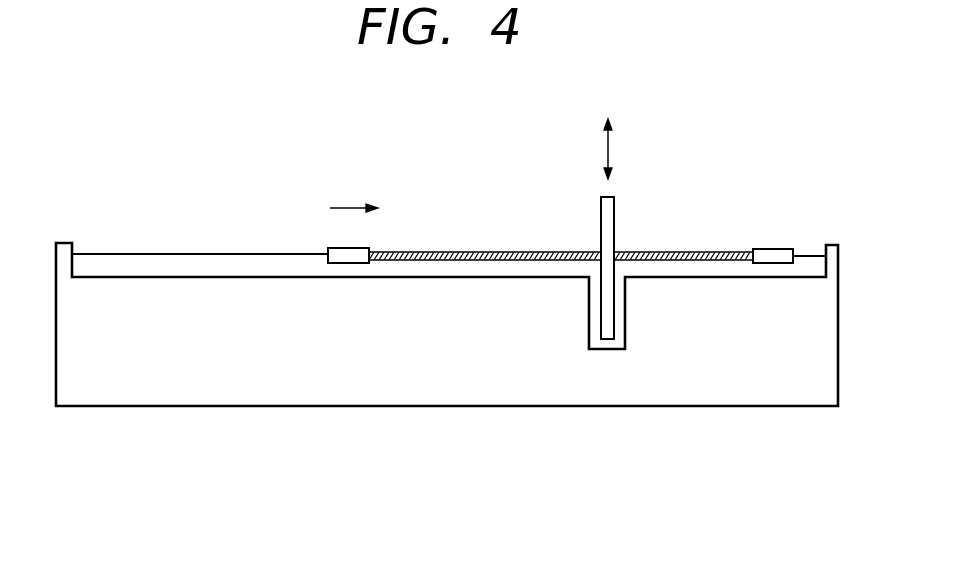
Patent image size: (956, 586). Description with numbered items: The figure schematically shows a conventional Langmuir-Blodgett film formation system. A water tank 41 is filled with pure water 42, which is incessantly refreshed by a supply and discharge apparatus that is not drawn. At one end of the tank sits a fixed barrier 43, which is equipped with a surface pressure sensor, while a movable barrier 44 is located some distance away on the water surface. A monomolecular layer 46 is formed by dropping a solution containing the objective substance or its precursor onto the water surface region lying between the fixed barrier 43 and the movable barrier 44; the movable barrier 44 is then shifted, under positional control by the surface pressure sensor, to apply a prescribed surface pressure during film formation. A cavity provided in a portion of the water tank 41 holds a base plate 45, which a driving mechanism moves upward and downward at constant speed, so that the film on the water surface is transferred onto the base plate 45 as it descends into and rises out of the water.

The water tank 41 is at (342, 387).
The pure water 42 is at (143, 258).
The fixed barrier 43 is at (774, 252).
The movable barrier 44 is at (329, 252).
The base plate 45 is at (608, 222).
The monomolecular layer 46 is at (488, 252).